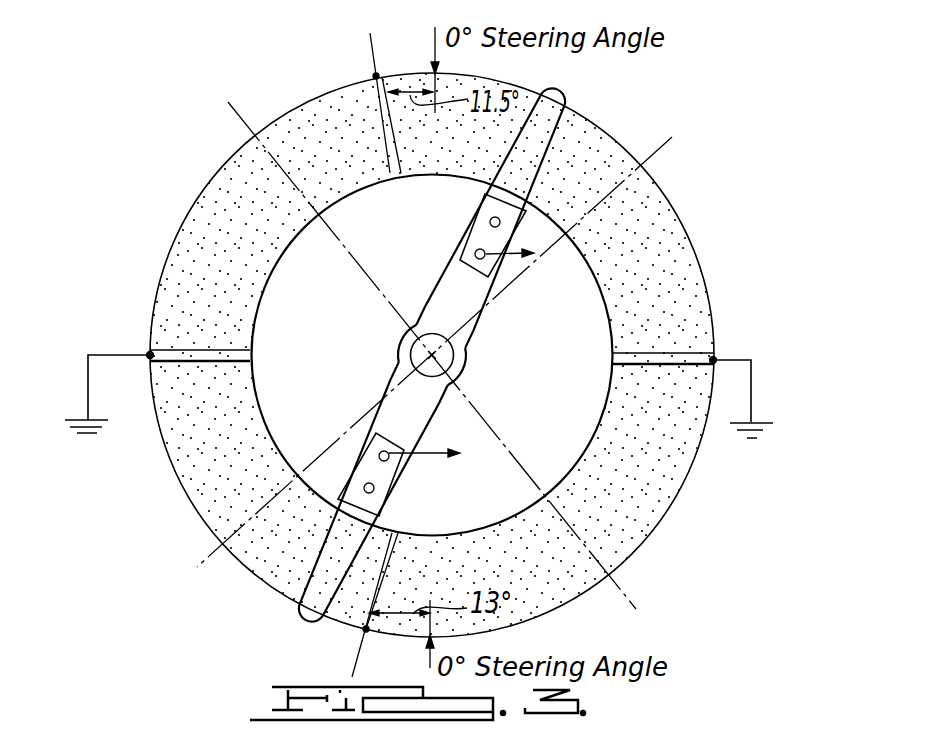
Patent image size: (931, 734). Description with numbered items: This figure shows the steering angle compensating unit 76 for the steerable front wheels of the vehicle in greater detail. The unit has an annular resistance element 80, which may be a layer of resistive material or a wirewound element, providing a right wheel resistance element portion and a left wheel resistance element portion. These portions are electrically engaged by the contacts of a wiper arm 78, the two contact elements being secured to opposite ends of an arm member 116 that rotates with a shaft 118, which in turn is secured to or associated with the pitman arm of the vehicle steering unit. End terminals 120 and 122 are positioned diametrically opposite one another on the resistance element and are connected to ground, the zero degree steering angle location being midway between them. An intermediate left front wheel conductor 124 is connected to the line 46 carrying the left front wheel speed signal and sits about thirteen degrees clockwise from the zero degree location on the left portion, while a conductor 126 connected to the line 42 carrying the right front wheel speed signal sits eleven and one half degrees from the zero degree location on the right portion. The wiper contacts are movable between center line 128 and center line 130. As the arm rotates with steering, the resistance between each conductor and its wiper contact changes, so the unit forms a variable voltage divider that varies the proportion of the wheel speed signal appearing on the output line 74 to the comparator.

The line 42 is at (377, 72).
The line 46 is at (356, 657).
The line 74 is at (469, 355).
The steering angle compensating unit 76 is at (703, 120).
The wiper arm 78 is at (440, 346).
The resistance element 80 is at (431, 355).
The arm member 116 is at (440, 346).
The shaft 118 is at (416, 345).
The end terminal 120 is at (690, 354).
The end terminal 122 is at (186, 349).
The left front wheel conductor 124 is at (388, 553).
The conductor 126 is at (373, 97).
The center line 128 is at (352, 261).
The center line 130 is at (650, 157).